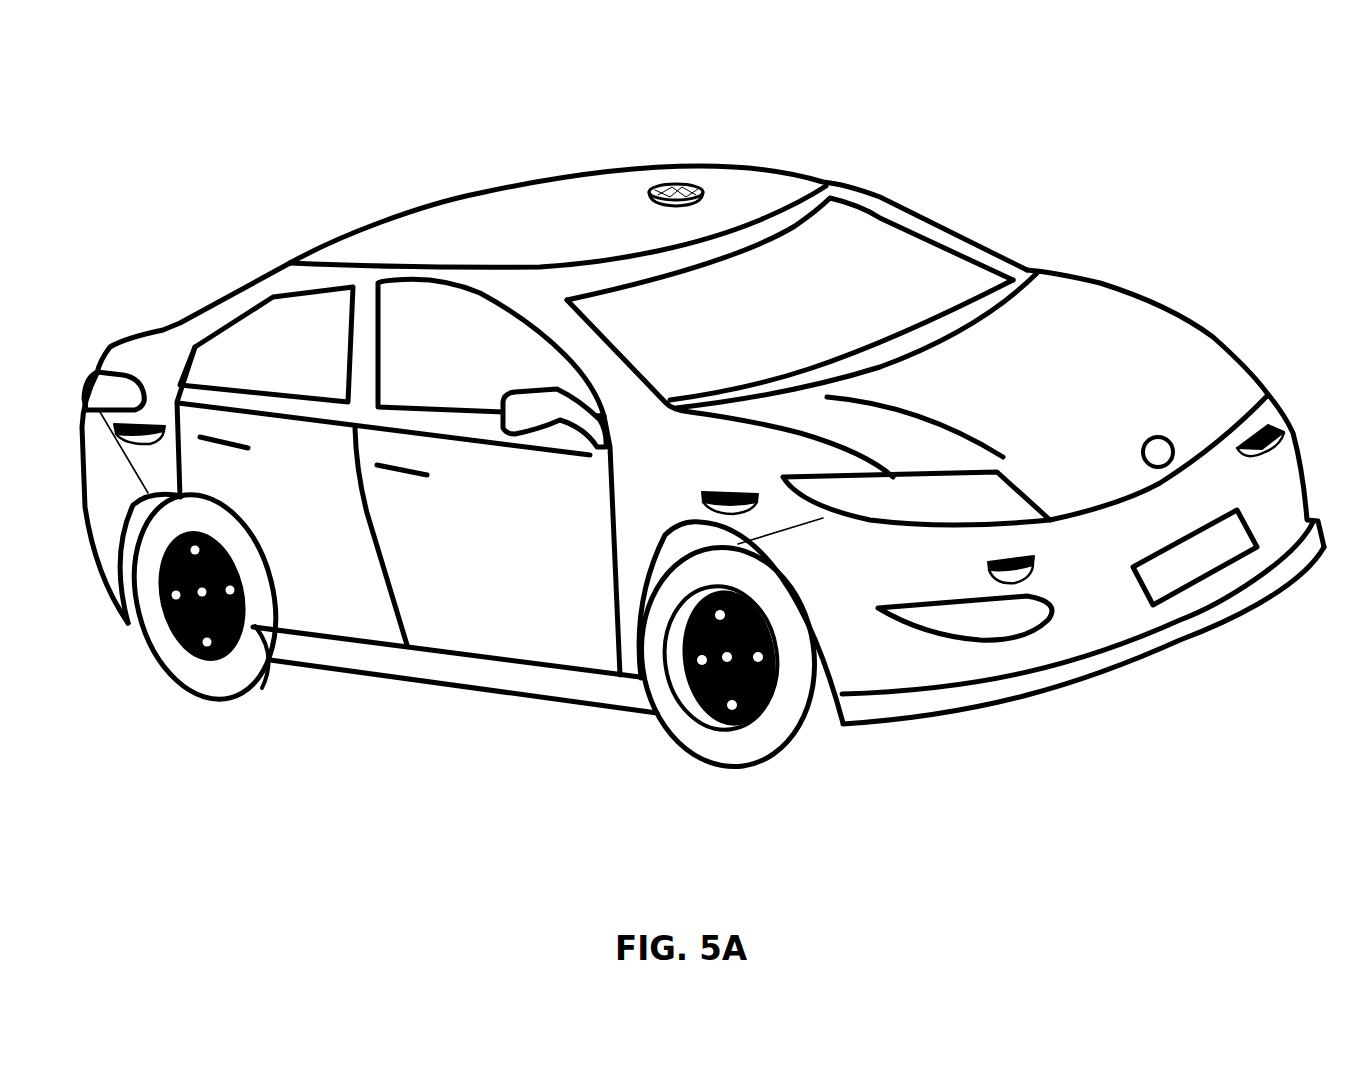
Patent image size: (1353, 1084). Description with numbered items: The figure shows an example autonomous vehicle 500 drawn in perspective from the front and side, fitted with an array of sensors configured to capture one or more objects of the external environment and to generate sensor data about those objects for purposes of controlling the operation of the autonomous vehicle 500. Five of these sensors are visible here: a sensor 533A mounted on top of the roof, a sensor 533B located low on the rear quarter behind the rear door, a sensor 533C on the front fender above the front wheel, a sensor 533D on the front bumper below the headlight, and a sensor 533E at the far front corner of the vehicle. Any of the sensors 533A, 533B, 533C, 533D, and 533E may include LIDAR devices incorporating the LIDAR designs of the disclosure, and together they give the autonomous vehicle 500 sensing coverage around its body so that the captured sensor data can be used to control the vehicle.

The autonomous vehicle 500 is at (1083, 113).
The sensor 533A is at (678, 184).
The sensor 533B is at (160, 423).
The sensor 533C is at (730, 493).
The sensor 533D is at (990, 565).
The sensor 533E is at (1238, 456).